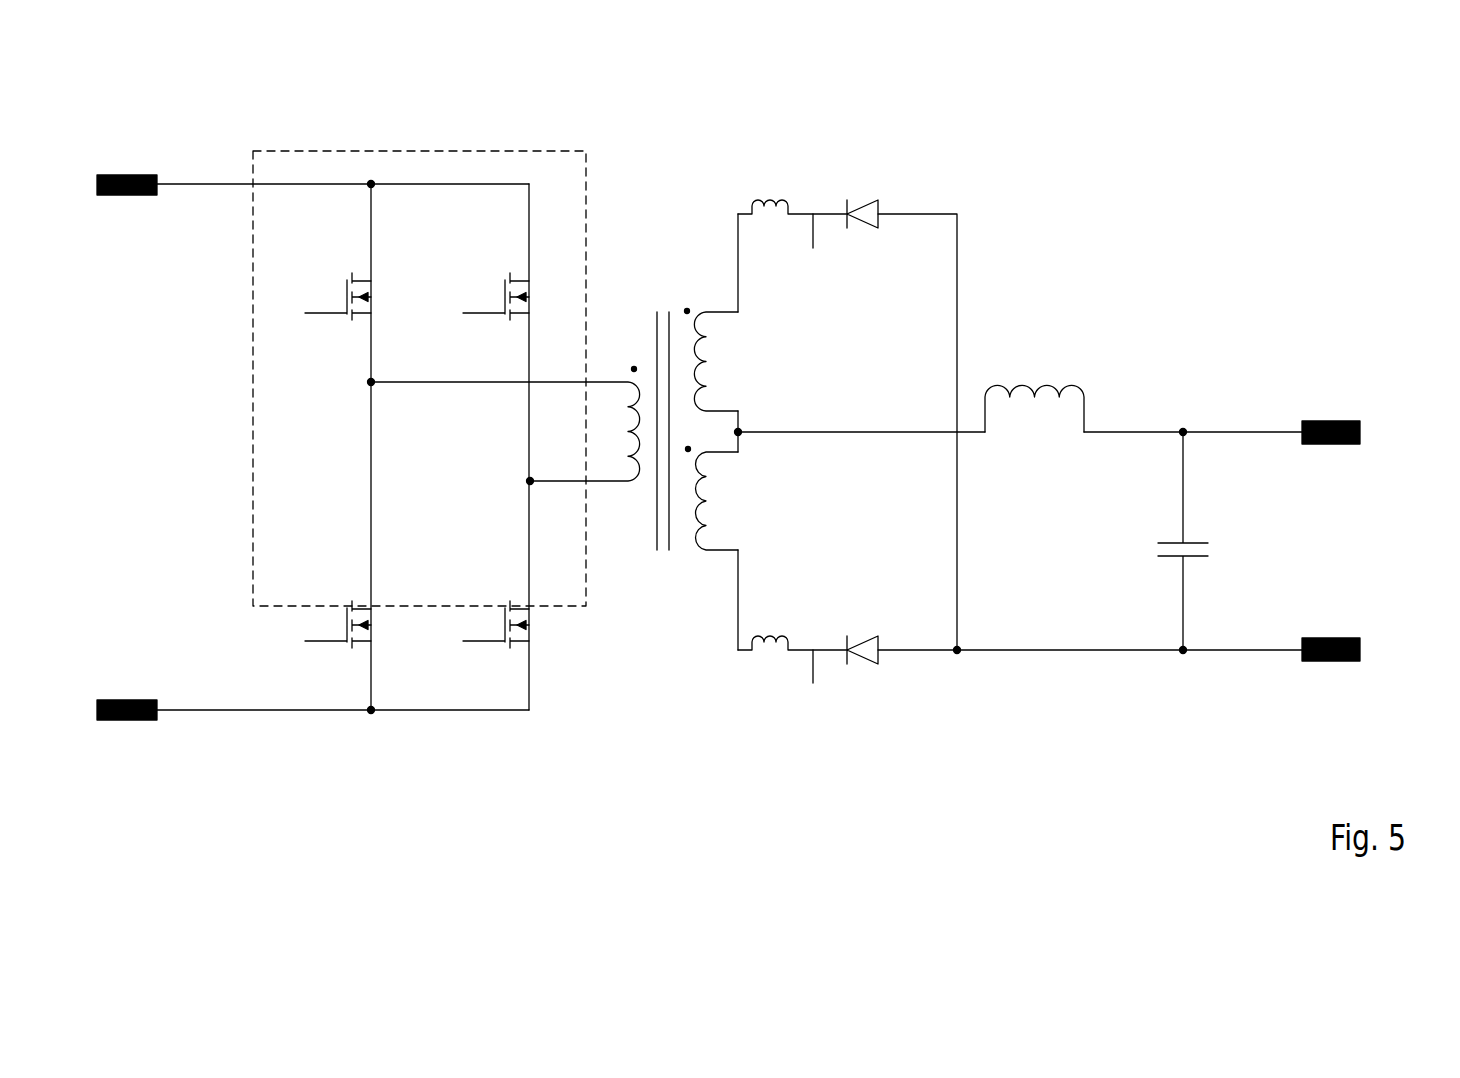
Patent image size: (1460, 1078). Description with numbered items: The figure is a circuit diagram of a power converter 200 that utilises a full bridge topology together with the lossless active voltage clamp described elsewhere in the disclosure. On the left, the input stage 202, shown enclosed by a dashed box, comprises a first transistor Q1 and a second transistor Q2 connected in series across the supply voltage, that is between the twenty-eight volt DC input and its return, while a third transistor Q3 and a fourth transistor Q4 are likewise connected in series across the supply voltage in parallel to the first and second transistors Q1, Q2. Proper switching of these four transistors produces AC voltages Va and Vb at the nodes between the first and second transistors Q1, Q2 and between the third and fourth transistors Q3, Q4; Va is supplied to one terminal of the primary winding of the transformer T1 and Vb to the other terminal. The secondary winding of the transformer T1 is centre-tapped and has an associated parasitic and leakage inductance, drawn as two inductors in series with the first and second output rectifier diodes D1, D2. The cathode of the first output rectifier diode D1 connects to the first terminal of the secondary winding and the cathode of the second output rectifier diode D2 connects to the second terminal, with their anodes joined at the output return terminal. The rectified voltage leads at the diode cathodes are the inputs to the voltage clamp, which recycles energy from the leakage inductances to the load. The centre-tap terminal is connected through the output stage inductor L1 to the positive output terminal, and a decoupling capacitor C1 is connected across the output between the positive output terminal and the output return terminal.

The converter 200 is at (1160, 86).
The input stage 202 is at (420, 151).
The first transistor Q1 is at (338, 268).
The second transistor Q2 is at (338, 595).
The third transistor Q3 is at (496, 268).
The fourth transistor Q4 is at (496, 595).
The transformer T1 is at (554, 413).
The first output rectifier diode D1 is at (861, 234).
The second output rectifier diode D2 is at (862, 670).
The output stage inductor L1 is at (1034, 390).
The decoupling capacitor C1 is at (1208, 541).